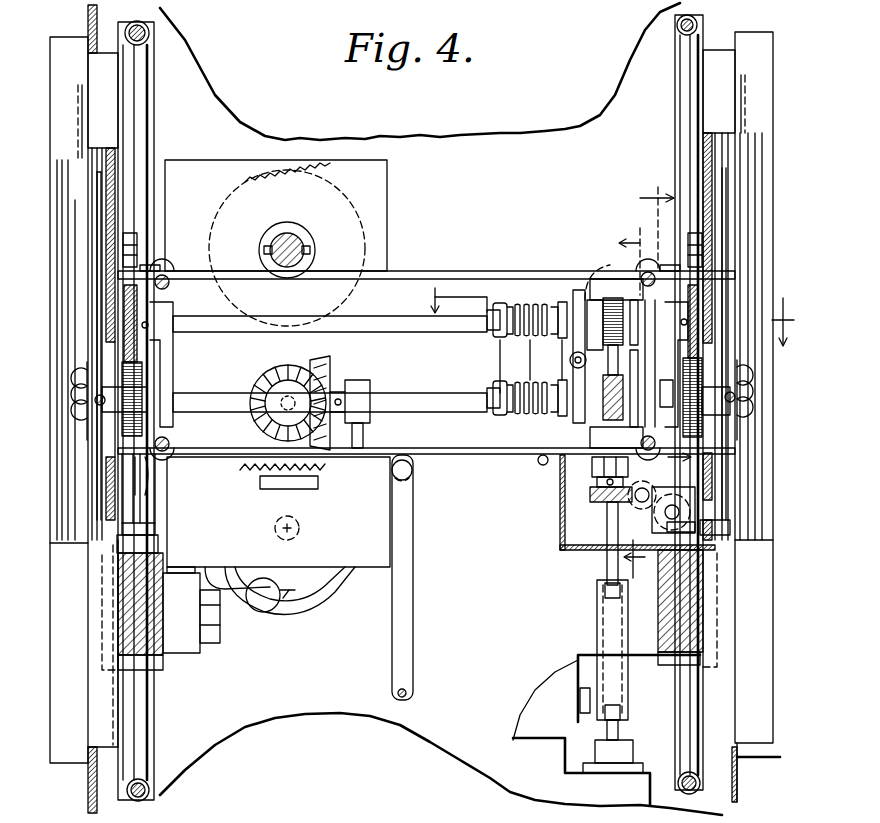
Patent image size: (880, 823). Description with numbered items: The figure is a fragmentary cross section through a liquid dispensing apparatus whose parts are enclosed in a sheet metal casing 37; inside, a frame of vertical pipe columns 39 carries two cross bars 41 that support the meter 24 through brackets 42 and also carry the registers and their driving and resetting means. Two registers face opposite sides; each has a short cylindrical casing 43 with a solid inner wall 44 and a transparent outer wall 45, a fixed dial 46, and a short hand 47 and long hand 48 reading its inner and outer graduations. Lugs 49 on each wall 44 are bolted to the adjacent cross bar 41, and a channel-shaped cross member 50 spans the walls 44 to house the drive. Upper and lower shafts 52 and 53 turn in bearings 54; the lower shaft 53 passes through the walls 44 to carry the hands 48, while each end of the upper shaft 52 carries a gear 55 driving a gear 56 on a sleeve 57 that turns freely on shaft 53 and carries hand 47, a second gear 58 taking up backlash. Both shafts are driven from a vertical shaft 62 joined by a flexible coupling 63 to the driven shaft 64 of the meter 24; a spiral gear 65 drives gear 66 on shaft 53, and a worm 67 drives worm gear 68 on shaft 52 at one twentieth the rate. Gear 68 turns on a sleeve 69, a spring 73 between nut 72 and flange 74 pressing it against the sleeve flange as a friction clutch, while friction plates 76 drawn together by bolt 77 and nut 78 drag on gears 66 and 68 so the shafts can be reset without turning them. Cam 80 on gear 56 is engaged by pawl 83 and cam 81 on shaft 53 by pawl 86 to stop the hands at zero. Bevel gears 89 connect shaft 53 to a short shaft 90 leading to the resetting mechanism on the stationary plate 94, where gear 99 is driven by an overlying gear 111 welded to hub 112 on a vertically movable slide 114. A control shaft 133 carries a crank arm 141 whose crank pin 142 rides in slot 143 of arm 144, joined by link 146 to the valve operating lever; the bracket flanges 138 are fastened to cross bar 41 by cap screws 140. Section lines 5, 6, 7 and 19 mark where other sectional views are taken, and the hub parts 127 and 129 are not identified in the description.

The section line 5- 5 is at (604, 313).
The section line 6- 6 is at (634, 396).
The side wall strip 7 is at (100, 27).
The section line 19 / bearing 19 is at (659, 335).
The meter 24 is at (581, 771).
The sheet metal casing 37 is at (441, 737).
The upper pipe columns 39 is at (150, 727).
The cross bars 41 is at (127, 645).
The brackets 42 is at (626, 671).
The cylindrical casing 43 is at (60, 68).
The inner wall 44 is at (114, 158).
The outer wall 45 is at (66, 242).
The dial 46 is at (112, 183).
The short hand 47 is at (97, 196).
The long hand 48 is at (78, 170).
The lugs 49 is at (148, 545).
The cross member 50 is at (426, 346).
The upper shaft 52 is at (330, 311).
The lower shaft 53 is at (467, 398).
The bearings 54 is at (168, 300).
The gear 55 is at (150, 255).
The gear 56 is at (112, 455).
The sleeve 57 is at (112, 437).
The second gear 58 is at (160, 268).
The vertical shaft 62 is at (605, 565).
The flexible coupling 63 is at (605, 600).
The driven shaft 64 is at (618, 730).
The spiral gear 65 is at (638, 455).
The spiral gear 66 is at (588, 410).
The worm 67 is at (590, 270).
The worm gear 68 is at (610, 307).
The sleeve 69 is at (483, 380).
The nut 72 is at (500, 338).
The spring 73 is at (530, 338).
The flange 74 is at (560, 340).
The friction plates 76 is at (561, 333).
The bolt 77 is at (615, 363).
The nut 78 is at (570, 360).
The cam 80 is at (660, 382).
The cam 81 is at (672, 400).
The pawl 83 is at (640, 345).
The pawl 86 is at (712, 488).
The bevel gears 89 is at (335, 394).
The short shaft 90 is at (283, 398).
The plate 94 is at (278, 512).
The gear 99 is at (268, 473).
The gear 111 is at (276, 243).
The hub 112 is at (285, 236).
The slide 114 is at (311, 490).
The shaft 127 is at (297, 248).
The key 129 is at (310, 250).
The shaft 133 is at (300, 528).
The flanges 138 is at (186, 633).
The cap screws 140 is at (225, 635).
The crank arm 141 is at (285, 598).
The crank pin 142 is at (264, 600).
The slot 143 is at (312, 590).
The arm 144 is at (332, 576).
The link 146 is at (413, 598).